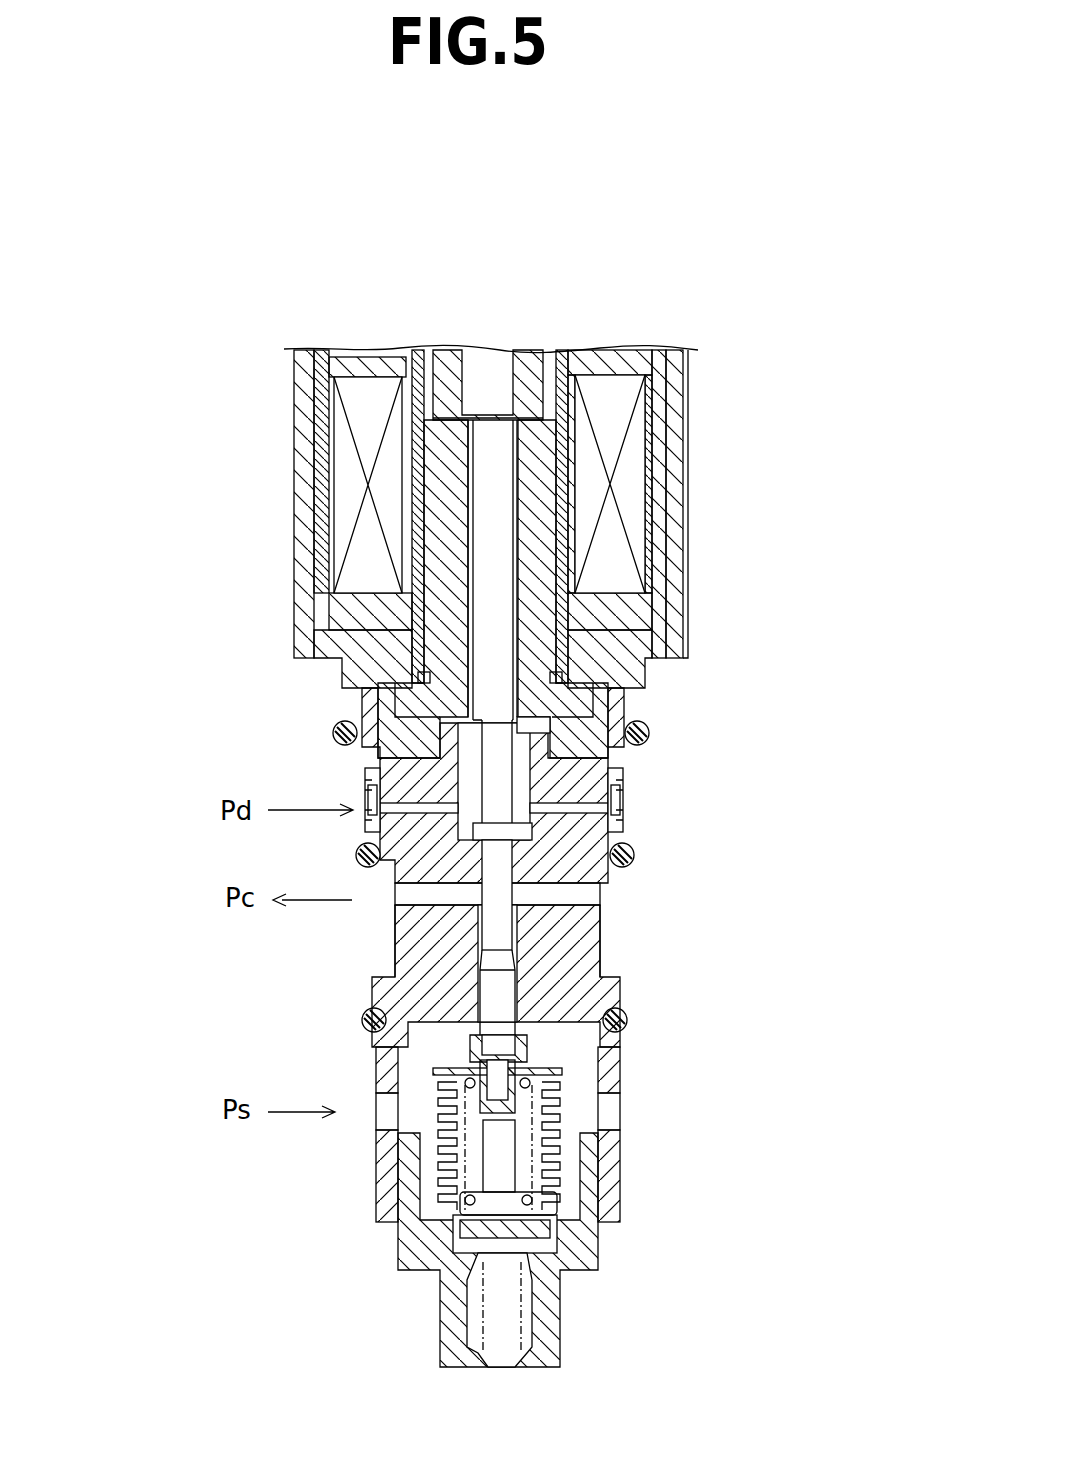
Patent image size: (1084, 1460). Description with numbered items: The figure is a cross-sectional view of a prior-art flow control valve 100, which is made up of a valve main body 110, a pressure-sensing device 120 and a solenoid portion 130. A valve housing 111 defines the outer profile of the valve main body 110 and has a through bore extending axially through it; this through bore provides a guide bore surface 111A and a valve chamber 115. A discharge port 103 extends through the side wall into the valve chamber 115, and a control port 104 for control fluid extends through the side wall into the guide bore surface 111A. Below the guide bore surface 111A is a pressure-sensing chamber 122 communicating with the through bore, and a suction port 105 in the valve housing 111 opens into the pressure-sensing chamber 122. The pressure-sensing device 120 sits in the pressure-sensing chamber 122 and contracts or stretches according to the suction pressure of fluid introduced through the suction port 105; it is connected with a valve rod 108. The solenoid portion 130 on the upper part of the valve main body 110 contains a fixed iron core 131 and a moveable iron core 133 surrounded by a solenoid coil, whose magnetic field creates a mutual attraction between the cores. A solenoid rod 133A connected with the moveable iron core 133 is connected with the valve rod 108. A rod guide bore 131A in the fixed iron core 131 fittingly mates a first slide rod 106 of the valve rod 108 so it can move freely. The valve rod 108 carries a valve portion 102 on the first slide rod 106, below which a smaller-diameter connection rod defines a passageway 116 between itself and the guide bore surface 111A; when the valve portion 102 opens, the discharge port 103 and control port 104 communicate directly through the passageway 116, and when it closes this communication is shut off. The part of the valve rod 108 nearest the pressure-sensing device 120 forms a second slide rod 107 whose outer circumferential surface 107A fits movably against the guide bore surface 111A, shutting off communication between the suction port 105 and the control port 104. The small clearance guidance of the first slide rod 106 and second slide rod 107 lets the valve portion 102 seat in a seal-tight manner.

The flow control valve 100 is at (688, 343).
The solenoid portion 130 is at (292, 489).
The moveable iron core 133 is at (529, 373).
The solenoid rod 133A is at (500, 572).
The fixed iron core 131 is at (440, 648).
The rod guide bore 131A is at (515, 780).
The valve main body 110 is at (357, 833).
The valve portion 102 is at (630, 830).
The discharge port 103 is at (628, 790).
The first slide rod 106 is at (645, 752).
The valve chamber 115 is at (473, 818).
The control port 104 is at (600, 893).
The valve housing 111 is at (440, 960).
The valve rod 108 is at (580, 917).
The guide bore surface 111A is at (395, 915).
The passageway 116 is at (507, 929).
The second slide rod 107 is at (497, 1003).
The outer circumferential surface 107A is at (470, 1042).
The suction port 105 is at (620, 1102).
The pressure-sensing chamber 122 is at (620, 1068).
The pressure-sensing device 120 is at (620, 1207).